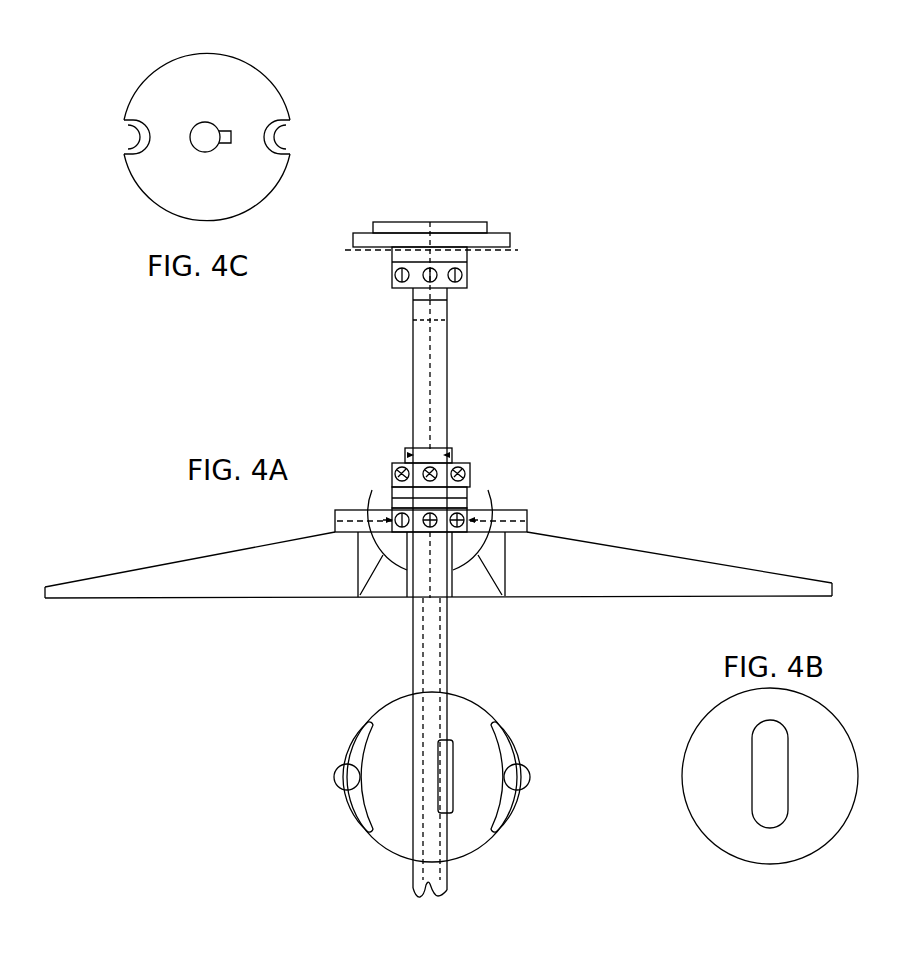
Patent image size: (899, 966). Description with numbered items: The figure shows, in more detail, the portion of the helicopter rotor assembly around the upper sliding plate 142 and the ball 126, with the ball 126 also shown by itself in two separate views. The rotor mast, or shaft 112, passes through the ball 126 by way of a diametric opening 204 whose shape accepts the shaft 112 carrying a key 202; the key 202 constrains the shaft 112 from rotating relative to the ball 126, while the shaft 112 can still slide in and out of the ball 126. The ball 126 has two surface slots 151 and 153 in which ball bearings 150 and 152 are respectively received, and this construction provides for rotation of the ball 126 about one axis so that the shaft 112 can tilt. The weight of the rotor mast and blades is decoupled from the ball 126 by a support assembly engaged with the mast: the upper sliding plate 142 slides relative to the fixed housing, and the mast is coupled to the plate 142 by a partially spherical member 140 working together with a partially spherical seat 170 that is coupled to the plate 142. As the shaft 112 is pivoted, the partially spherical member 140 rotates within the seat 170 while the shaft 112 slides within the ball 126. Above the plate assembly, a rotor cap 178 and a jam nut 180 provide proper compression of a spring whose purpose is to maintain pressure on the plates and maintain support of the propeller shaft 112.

In FIG. 4A, the shaft 112 is at (440, 375).
In FIG. 4C, the ball 126 is at (233, 67).
In FIG. 4A, the ball 126 is at (472, 838).
In FIG. 4B, the ball 126 is at (712, 825).
In FIG. 4A, the partially spherical member 140 is at (482, 490).
In FIG. 4A, the upper sliding plate 142 is at (657, 557).
In FIG. 4A, the ball bearing 150 is at (521, 775).
In FIG. 4C, the surface slot 151 is at (287, 135).
In FIG. 4A, the surface slot 151 is at (503, 810).
In FIG. 4B, the surface slot 151 is at (776, 823).
In FIG. 4A, the ball bearing 152 is at (333, 776).
In FIG. 4C, the surface slot 153 is at (127, 135).
In FIG. 4A, the surface slot 153 is at (353, 813).
In FIG. 4A, the partially spherical seat 170 is at (522, 512).
In FIG. 4A, the rotor cap 178 is at (465, 277).
In FIG. 4A, the jam nut 180 is at (483, 223).
In FIG. 4A, the key 202 is at (445, 763).
In FIG. 4C, the diametric opening 204 is at (202, 127).